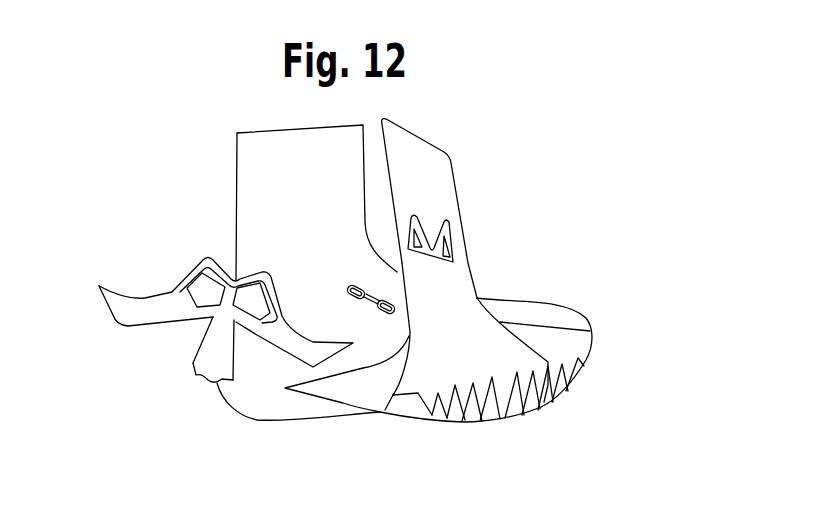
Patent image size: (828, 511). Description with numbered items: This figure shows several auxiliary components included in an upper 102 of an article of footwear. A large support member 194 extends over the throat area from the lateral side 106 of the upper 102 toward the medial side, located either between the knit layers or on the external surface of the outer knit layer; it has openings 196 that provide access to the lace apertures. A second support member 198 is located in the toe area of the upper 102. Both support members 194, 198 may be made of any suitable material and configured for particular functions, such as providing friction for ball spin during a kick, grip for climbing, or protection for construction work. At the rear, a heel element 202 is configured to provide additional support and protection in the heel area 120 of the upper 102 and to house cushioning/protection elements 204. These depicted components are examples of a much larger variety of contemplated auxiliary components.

The upper 102 is at (560, 308).
The lateral side 106 is at (415, 410).
The heel area 120 is at (247, 402).
The support member 194 is at (447, 187).
The openings 196 is at (452, 252).
The support member 198 is at (577, 343).
The heel element 202 is at (226, 316).
The cushioning/protection elements 204 is at (203, 280).